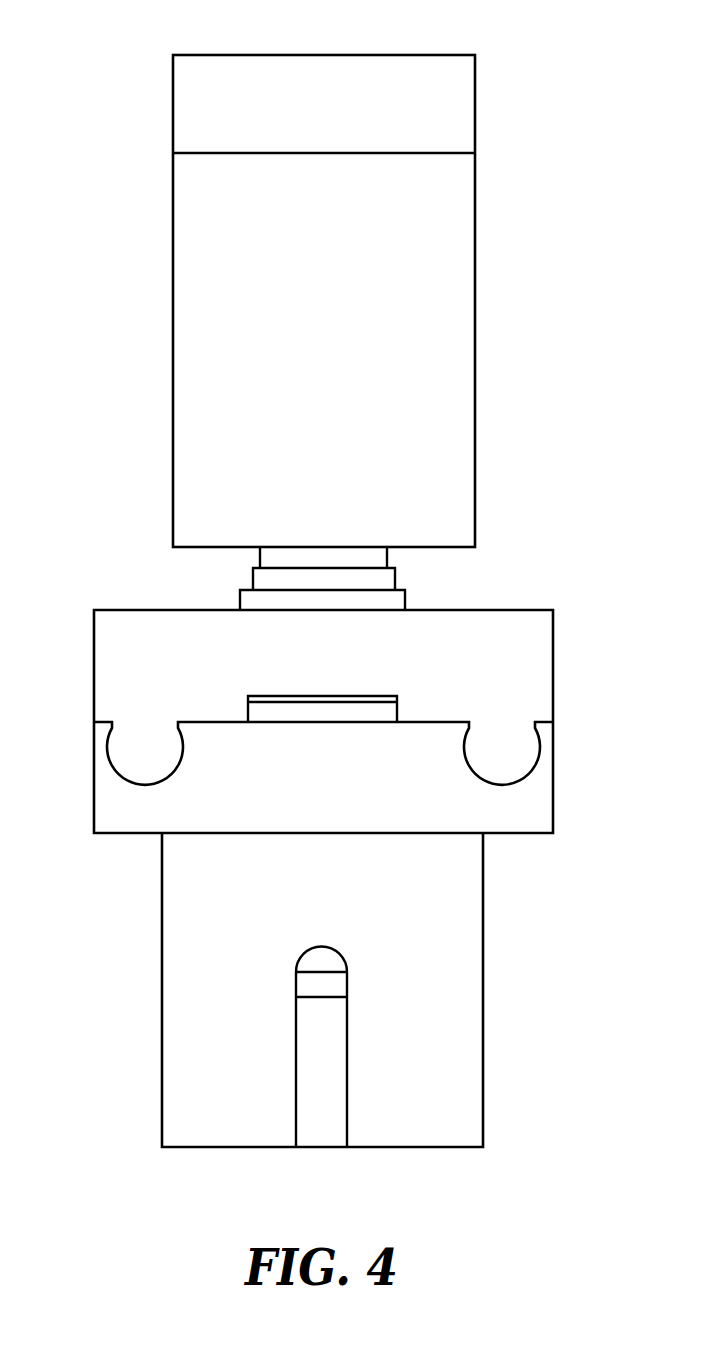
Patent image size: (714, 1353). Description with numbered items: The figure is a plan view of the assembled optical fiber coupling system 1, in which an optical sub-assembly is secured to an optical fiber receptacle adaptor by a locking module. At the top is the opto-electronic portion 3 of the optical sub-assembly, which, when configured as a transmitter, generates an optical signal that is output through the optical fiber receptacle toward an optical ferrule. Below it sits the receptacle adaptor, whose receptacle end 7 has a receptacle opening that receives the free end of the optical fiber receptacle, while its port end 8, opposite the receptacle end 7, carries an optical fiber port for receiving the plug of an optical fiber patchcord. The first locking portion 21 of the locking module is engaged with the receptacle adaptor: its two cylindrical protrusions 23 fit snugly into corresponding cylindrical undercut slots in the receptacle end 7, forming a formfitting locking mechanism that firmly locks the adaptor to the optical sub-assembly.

The optical fiber coupling system 1 is at (100, 322).
The opto-electronic portion 3 is at (463, 331).
The first locking portion 21 is at (540, 658).
The cylindrical protrusions 23 is at (503, 755).
The receptacle end 7 is at (135, 817).
The port end 8 is at (470, 997).